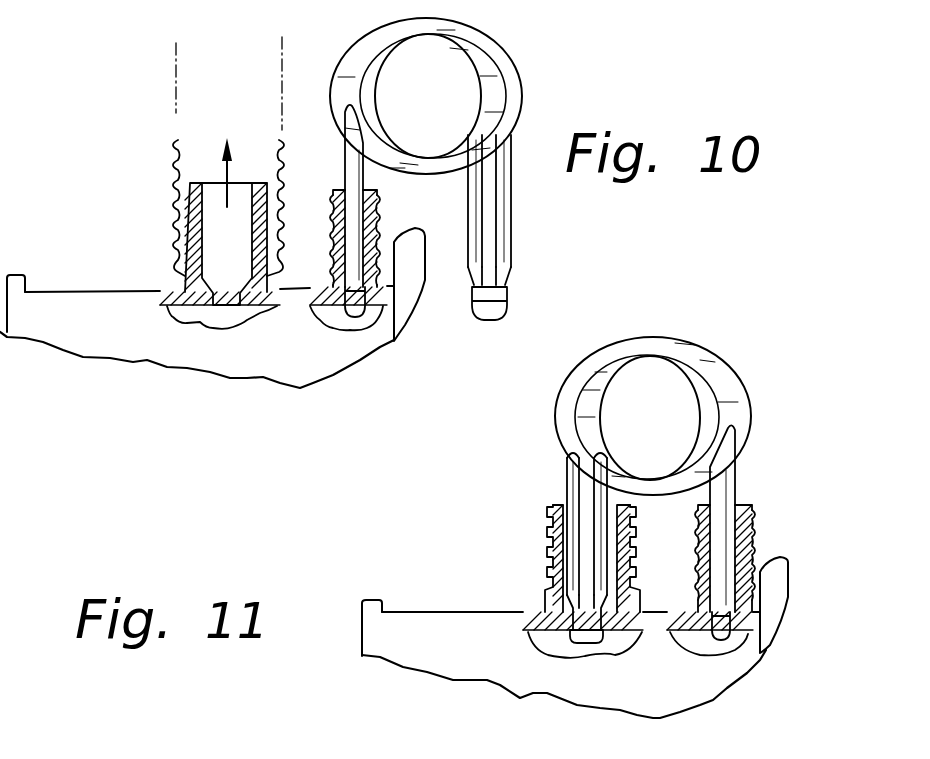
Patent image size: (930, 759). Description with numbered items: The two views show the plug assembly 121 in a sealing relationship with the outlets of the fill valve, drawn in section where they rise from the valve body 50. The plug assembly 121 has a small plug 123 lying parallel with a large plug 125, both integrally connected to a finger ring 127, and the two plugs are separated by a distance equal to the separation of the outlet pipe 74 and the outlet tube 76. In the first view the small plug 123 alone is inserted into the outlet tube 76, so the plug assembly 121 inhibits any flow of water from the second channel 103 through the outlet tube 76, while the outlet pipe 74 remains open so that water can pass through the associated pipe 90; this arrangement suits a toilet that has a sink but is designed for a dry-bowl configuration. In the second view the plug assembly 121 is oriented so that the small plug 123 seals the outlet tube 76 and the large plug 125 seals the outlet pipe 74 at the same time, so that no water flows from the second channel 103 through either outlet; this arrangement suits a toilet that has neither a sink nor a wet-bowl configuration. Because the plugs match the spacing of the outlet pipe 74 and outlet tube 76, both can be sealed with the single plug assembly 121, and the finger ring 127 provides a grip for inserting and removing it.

In FIG. 10, the base plate / housing 50 is at (70, 308).
In FIG. 11, the base plate / housing 50 is at (412, 632).
In FIG. 10, the outlet pipe 74 is at (182, 281).
In FIG. 11, the outlet pipe 74 is at (547, 510).
In FIG. 10, the outlet tube 76 is at (378, 232).
In FIG. 11, the outlet tube 76 is at (745, 553).
In FIG. 10, the pipe 90 is at (205, 115).
In FIG. 11, the second channel 103 is at (543, 636).
In FIG. 11, the plug assembly 121 is at (675, 312).
In FIG. 10, the small plug 123 is at (350, 163).
In FIG. 11, the small plug 123 is at (730, 497).
In FIG. 10, the large plug 125 is at (497, 233).
In FIG. 11, the large plug 125 is at (565, 460).
In FIG. 11, the finger ring 127 is at (738, 388).